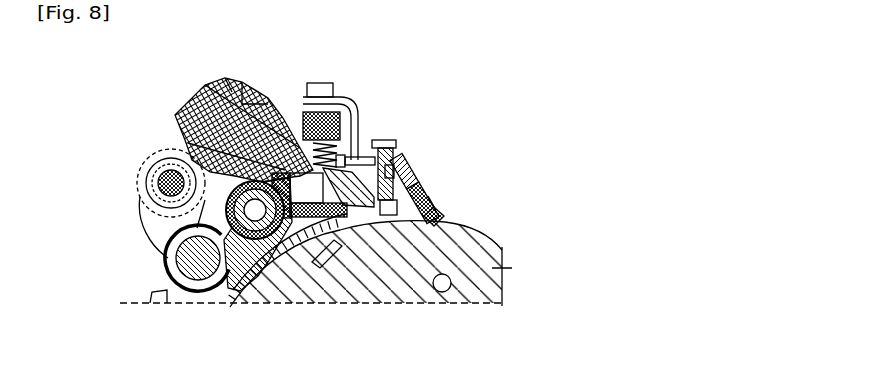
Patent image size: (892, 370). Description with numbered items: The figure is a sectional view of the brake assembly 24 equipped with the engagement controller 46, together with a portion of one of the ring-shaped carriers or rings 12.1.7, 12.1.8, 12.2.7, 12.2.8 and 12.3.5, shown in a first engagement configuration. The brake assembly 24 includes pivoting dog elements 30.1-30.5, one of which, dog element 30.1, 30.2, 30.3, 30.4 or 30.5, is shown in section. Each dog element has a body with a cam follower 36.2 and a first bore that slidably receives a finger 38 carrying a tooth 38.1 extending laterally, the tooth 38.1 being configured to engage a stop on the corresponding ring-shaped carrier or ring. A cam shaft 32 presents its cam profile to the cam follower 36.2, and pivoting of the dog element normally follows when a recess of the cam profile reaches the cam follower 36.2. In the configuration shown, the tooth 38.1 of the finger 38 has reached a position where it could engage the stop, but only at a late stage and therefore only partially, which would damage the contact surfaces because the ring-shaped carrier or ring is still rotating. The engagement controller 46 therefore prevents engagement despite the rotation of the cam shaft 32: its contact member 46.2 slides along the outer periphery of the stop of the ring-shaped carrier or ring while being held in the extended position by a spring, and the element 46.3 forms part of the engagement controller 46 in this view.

The brake assembly 24 is at (134, 123).
The dog elements 30.1-30.5 is at (376, 110).
The dog element 30.1 is at (376, 110).
The dog element 30.2 is at (376, 110).
The dog element 30.3 is at (376, 110).
The dog element 30.4 is at (376, 110).
The dog element 30.5 is at (386, 120).
The cam shaft 32 is at (178, 252).
The cam follower 36.2 is at (165, 290).
The finger 38 is at (386, 160).
The tooth 38.1 is at (437, 198).
The engagement controller 46 is at (448, 169).
The contact member 46.2 is at (437, 217).
The lever pivot 46.3 is at (398, 160).
The ring-shaped carrier or ring 12.1.7 is at (407, 270).
The ring-shaped carrier or ring 12.1.8 is at (407, 270).
The ring-shaped carrier or ring 12.2.7 is at (407, 270).
The ring-shaped carrier or ring 12.2.8 is at (407, 270).
The ring-shaped carrier or ring 12.3.5 is at (502, 268).